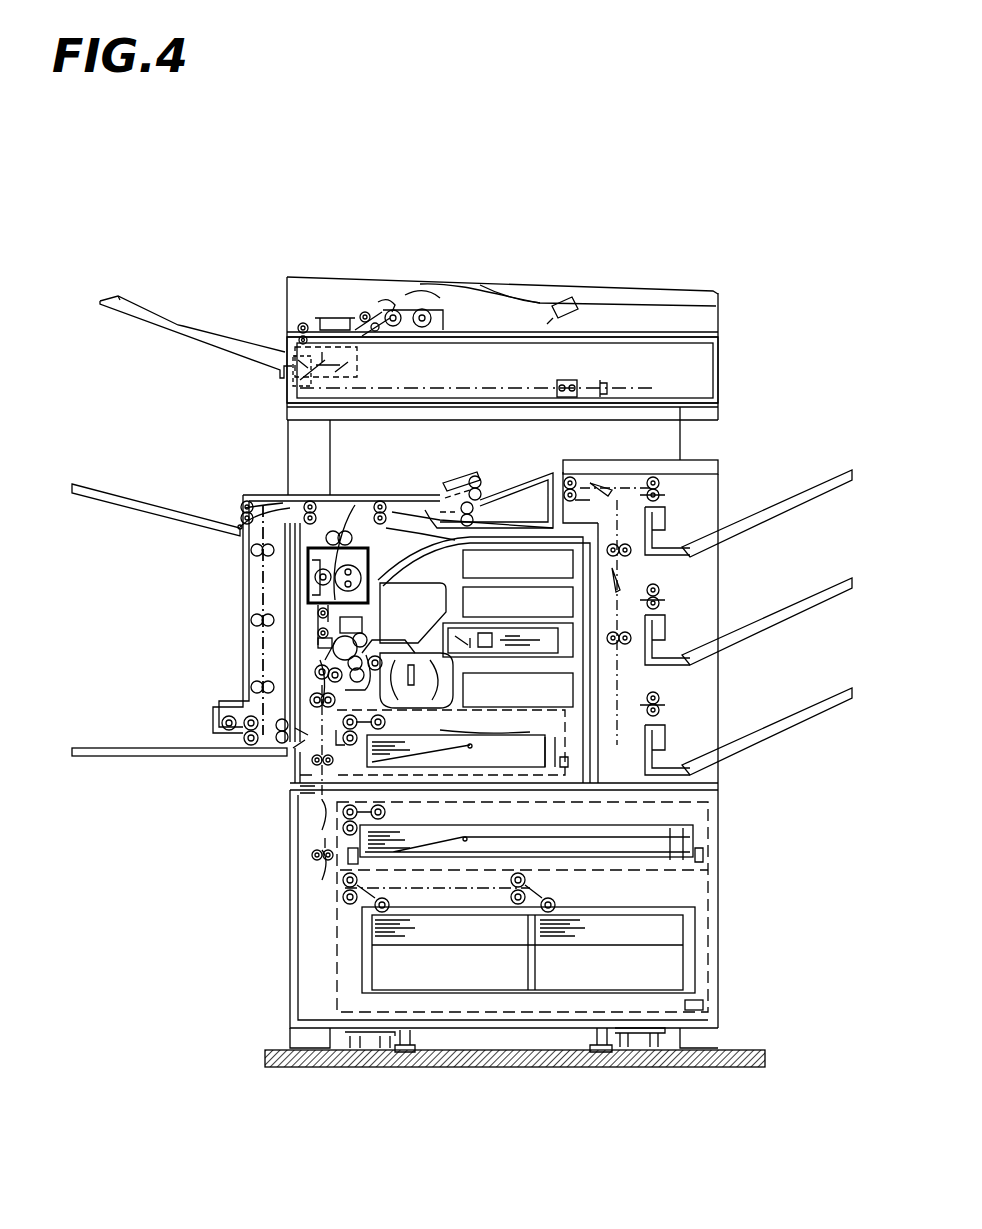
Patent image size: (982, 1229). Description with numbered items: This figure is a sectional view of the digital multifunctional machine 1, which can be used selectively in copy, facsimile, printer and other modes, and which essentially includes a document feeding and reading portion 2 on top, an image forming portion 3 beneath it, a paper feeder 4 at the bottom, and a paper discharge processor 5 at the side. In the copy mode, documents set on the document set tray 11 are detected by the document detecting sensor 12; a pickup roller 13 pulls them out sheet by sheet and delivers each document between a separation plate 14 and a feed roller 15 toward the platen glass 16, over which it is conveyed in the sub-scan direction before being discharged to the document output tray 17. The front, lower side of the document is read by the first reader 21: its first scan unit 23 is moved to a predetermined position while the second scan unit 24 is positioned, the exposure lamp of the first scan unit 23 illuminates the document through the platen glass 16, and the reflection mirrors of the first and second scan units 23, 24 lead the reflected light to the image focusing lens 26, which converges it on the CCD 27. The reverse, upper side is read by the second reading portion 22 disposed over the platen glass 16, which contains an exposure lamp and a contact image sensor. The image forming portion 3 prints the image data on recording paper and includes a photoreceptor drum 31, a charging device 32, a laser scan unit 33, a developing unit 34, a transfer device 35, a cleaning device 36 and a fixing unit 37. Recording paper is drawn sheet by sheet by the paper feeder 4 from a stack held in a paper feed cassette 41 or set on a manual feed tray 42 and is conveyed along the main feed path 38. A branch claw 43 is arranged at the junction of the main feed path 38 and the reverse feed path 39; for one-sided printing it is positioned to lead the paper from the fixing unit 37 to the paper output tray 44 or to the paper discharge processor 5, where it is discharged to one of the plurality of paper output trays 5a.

The digital multifunctional machine 1 is at (533, 158).
The document feeding and reading portion 2 is at (782, 343).
The image forming portion 3 is at (302, 468).
The paper feeder 4 is at (268, 908).
The paper discharge processor 5 is at (795, 465).
The paper output trays 5a is at (783, 503).
The document set tray 11 is at (493, 312).
The document detecting sensor 12 is at (567, 307).
The pickup roller 13 is at (425, 330).
The separation plate 14 is at (377, 312).
The feed roller 15 is at (394, 328).
The platen glass 16 is at (653, 340).
The document output tray 17 is at (162, 312).
The first reader 21 is at (703, 385).
The second reading portion 22 is at (332, 320).
The first scan unit 23 is at (345, 378).
The second scan unit 24 is at (292, 387).
The image focusing lens 26 is at (572, 380).
The CCD 27 is at (605, 378).
The photoreceptor drum 31 is at (378, 645).
The charging device 32 is at (370, 640).
The laser scan unit 33 is at (477, 628).
The developing unit 34 is at (452, 692).
The transfer device 35 is at (317, 622).
The cleaning device 36 is at (380, 577).
The fixing unit 37 is at (307, 587).
The main feed path 38 is at (318, 690).
The reverse feed path 39 is at (260, 630).
The paper feed cassette 41 is at (360, 957).
The manual feed tray 42 is at (120, 750).
The branch claw 43 is at (353, 512).
The paper output tray 44 is at (518, 480).